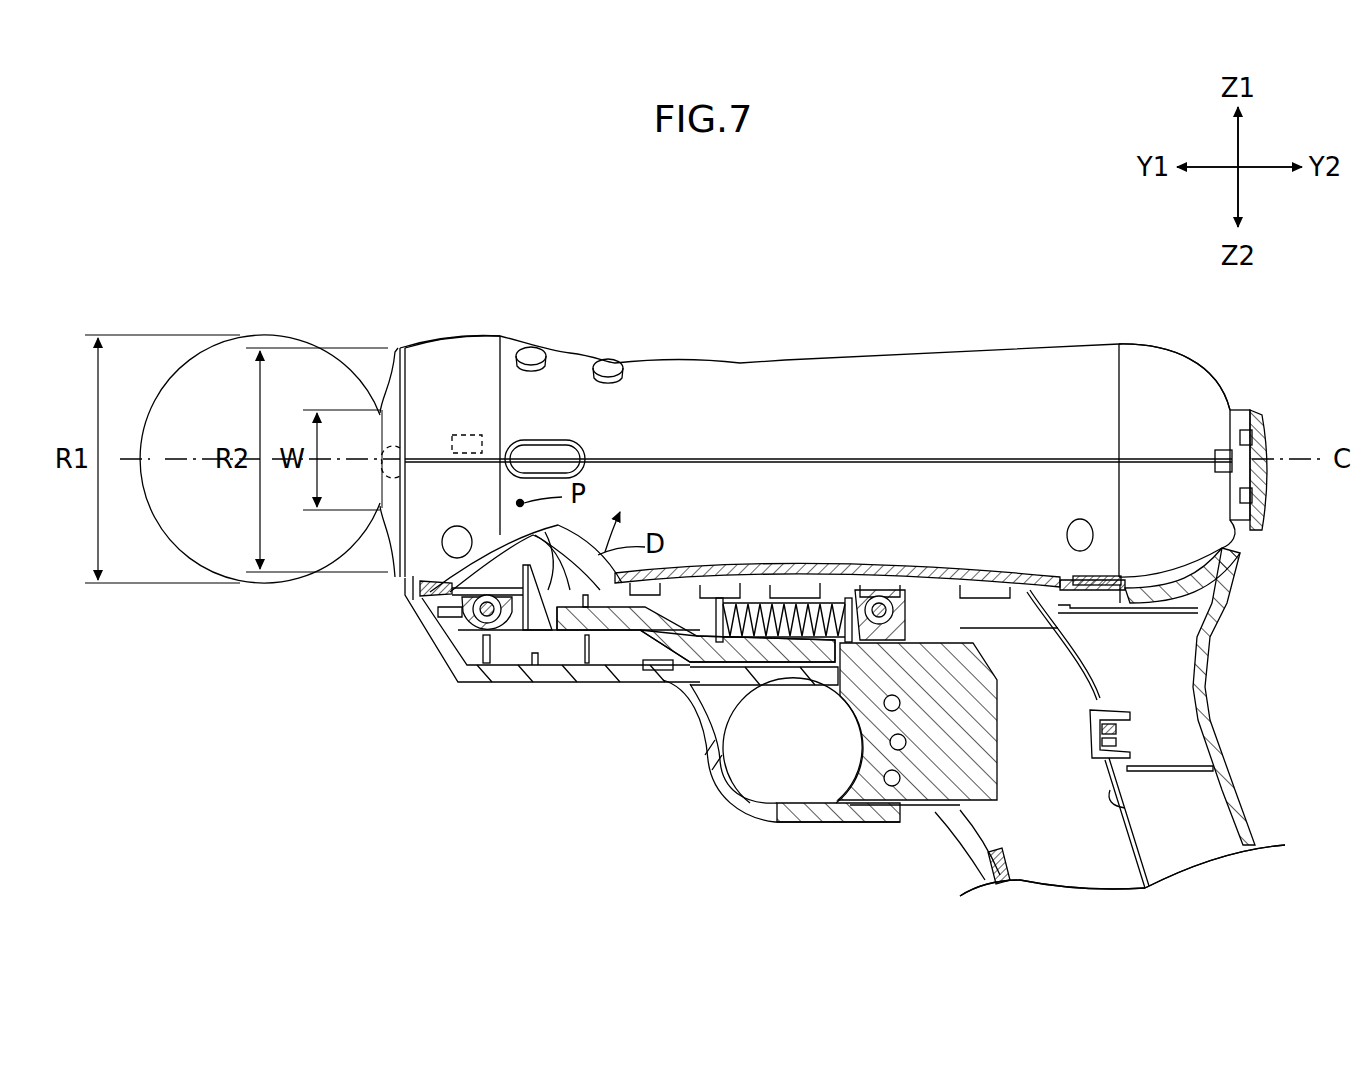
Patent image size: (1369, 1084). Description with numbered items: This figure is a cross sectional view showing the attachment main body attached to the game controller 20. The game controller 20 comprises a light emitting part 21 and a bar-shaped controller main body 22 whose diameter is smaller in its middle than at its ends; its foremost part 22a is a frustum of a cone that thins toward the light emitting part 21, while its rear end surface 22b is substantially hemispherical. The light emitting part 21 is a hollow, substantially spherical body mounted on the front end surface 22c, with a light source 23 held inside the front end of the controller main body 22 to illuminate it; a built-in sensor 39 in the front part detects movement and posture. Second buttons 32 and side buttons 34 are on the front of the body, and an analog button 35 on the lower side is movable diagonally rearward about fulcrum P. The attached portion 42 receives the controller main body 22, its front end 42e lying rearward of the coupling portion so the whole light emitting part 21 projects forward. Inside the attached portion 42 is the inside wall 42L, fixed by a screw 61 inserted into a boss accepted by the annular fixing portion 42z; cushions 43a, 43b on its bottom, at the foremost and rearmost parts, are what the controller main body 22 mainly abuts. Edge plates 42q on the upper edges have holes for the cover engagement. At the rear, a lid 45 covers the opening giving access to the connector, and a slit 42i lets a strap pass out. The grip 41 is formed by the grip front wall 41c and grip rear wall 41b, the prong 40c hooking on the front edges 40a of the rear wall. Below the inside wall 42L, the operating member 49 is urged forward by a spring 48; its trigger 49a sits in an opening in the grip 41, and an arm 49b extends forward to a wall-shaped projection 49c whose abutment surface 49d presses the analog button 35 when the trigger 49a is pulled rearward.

The game controller 20 is at (950, 275).
The light emitting part 21 is at (262, 333).
The controller main body 22 is at (832, 375).
The foremost part 22a is at (458, 333).
The rear end surface 22b is at (1213, 380).
The front end surface 22c is at (388, 398).
The light source 23 is at (395, 445).
The second buttons 32 is at (607, 355).
The side buttons 34 is at (550, 455).
The analog button 35 is at (612, 632).
The sensor 39 is at (465, 433).
The front edges 40a is at (1180, 768).
The prong 40c is at (1118, 728).
The grip 41 is at (1265, 810).
The grip rear wall 41b is at (1200, 840).
The grip front wall 41c is at (1055, 855).
The attached portion 42 is at (722, 555).
The inside wall 42L is at (800, 570).
The front end 42e is at (410, 592).
The slit 42i is at (1243, 542).
The edge plate 42q is at (1232, 460).
The fixing portion 42z is at (465, 615).
The cushion 43a is at (445, 582).
The cushion 43b is at (1100, 578).
The lid 45 is at (1265, 440).
The spring 48 is at (760, 600).
The operating member 49 is at (845, 735).
The trigger 49a is at (920, 780).
The arm 49b is at (640, 637).
The projection 49c is at (532, 635).
The abutment surface 49d is at (580, 555).
The screw 61 is at (485, 628).